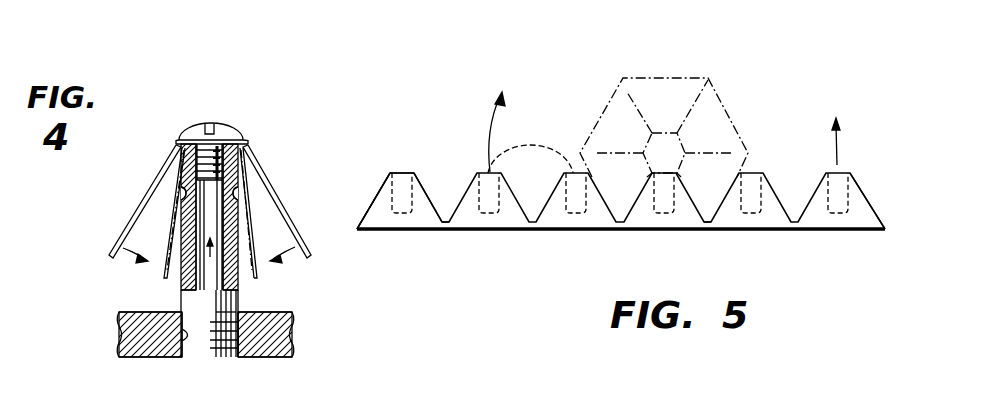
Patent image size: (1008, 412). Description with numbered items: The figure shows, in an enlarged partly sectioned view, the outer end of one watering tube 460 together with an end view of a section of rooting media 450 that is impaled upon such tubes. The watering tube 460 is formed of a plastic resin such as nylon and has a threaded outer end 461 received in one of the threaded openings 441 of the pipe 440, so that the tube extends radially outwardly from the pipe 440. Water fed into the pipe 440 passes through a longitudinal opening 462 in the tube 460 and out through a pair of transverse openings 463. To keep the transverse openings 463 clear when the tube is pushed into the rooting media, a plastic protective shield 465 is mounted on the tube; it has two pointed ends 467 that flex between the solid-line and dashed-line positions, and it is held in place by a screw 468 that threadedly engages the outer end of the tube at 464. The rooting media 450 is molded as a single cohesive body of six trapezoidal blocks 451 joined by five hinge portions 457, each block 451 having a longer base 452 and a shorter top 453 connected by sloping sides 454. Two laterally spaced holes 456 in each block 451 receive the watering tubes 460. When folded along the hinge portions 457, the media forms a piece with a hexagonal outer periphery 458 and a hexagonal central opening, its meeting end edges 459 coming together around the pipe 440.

In FIG. 4, the pipe 440 is at (125, 333).
In FIG. 4, the threaded openings 441 is at (163, 358).
In FIG. 5, the rooting media 450 is at (430, 146).
In FIG. 5, the blocks 451 is at (382, 205).
In FIG. 5, the longer base 452 is at (388, 232).
In FIG. 5, the shorter top 453 is at (393, 172).
In FIG. 5, the sloping sides 454 is at (375, 209).
In FIG. 5, the holes 456 is at (787, 135).
In FIG. 5, the hinge portions 457 is at (448, 232).
In FIG. 5, the hexagonal outer periphery 458 is at (633, 78).
In FIG. 5, the end edges 459 is at (355, 232).
In FIG. 4, the watering tube 460 is at (178, 297).
In FIG. 4, the threaded outer end 461 is at (227, 358).
In FIG. 4, the longitudinal opening 462 is at (222, 262).
In FIG. 4, the transverse openings 463 is at (185, 198).
In FIG. 4, the threaded engagement of screw with outer end of tube 464 is at (225, 165).
In FIG. 4, the protective shield 465 is at (136, 204).
In FIG. 4, the pointed ends 467 is at (165, 240).
In FIG. 4, the screw 468 is at (198, 130).